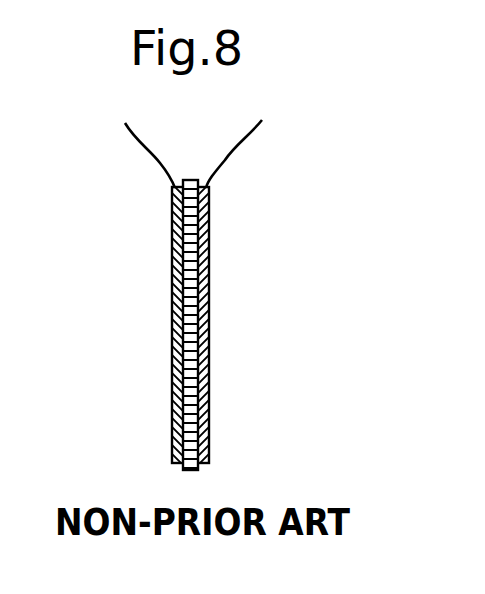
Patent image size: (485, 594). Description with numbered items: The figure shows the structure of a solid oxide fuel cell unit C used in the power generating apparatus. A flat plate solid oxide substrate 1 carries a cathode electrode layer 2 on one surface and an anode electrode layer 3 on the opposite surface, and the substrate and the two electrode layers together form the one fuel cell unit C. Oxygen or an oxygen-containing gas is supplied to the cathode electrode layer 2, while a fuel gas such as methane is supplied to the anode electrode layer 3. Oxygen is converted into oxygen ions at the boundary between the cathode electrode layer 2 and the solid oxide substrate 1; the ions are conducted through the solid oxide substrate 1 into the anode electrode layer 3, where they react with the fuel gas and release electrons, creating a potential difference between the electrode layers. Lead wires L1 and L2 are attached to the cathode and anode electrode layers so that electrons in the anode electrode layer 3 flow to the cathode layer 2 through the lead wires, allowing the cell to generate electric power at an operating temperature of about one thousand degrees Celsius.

The lead wire L1 is at (135, 141).
The lead wire L2 is at (248, 141).
The solid oxide fuel cell unit C is at (214, 324).
The solid oxide substrate 1 is at (193, 471).
The cathode electrode layer 2 is at (173, 326).
The anode electrode layer 3 is at (210, 335).